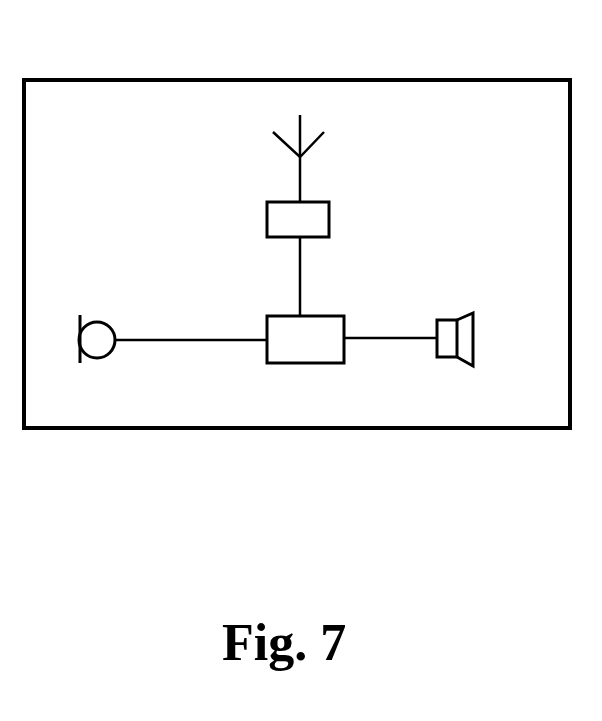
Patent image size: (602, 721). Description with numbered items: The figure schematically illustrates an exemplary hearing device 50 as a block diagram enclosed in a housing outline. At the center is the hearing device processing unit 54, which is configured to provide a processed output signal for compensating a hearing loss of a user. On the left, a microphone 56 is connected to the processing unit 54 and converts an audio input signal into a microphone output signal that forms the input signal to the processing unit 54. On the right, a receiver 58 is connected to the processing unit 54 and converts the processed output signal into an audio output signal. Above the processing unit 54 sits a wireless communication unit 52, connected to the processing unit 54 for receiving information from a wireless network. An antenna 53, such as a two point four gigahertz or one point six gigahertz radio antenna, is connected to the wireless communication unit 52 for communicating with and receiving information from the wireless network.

The hearing device 50 is at (305, 80).
The wireless communication unit 52 is at (332, 212).
The antenna 53 is at (317, 153).
The hearing device processing unit 54 is at (321, 365).
The microphone 56 is at (95, 315).
The receiver 58 is at (453, 313).